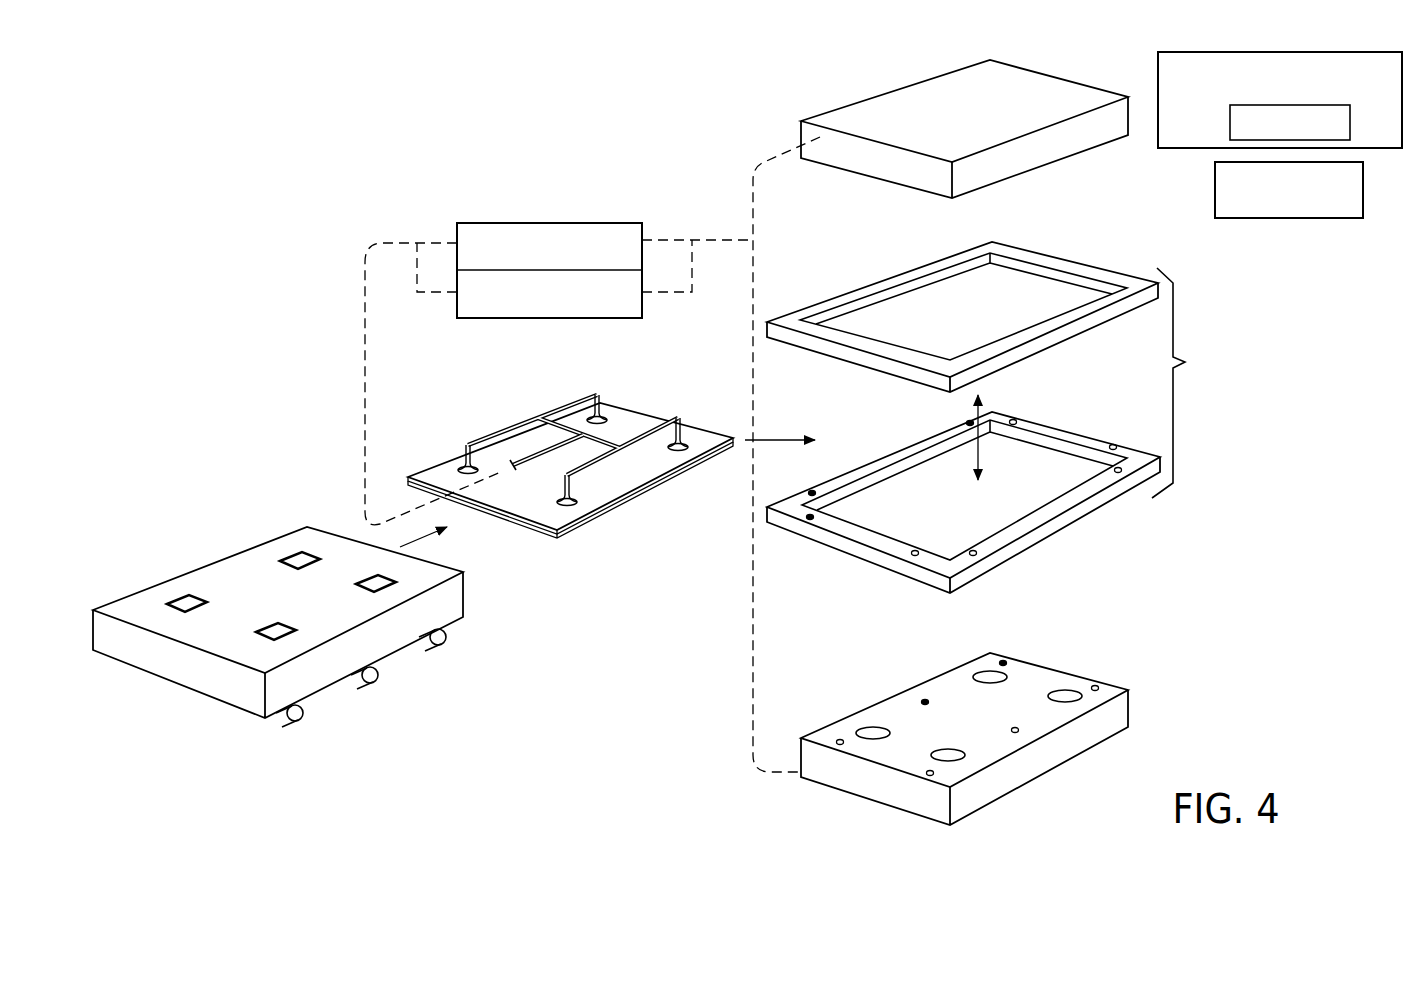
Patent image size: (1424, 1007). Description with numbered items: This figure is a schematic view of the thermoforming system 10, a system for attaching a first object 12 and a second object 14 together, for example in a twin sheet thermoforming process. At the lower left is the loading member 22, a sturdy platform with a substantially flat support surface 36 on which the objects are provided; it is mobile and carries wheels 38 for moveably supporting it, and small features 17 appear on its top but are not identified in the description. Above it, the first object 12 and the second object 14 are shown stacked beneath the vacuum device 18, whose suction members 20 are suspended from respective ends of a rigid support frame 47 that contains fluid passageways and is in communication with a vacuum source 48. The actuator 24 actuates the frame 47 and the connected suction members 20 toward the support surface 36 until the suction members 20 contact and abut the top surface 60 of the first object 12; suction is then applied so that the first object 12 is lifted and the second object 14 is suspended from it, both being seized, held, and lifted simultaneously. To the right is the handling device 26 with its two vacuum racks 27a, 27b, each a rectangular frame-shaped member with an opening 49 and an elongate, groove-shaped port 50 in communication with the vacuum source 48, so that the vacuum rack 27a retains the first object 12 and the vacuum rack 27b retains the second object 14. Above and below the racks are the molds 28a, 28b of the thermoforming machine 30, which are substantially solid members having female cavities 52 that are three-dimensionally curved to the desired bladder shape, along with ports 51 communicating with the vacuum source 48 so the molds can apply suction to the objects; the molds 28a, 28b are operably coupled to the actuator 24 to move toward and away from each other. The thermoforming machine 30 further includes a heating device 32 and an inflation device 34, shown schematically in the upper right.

The thermoforming system 10 is at (300, 252).
The first object 12 is at (710, 440).
The second object 14 is at (710, 460).
The locating pads 17 is at (300, 557).
The vacuum device 18 is at (497, 315).
The suction members 20 is at (602, 420).
The loading member 22 is at (200, 675).
The actuator 24 is at (467, 232).
The handling device 26 is at (1186, 383).
The vacuum rack 27a is at (1078, 263).
The vacuum rack 27b is at (1087, 515).
The mold 28a is at (1062, 143).
The mold 28b is at (1048, 752).
The thermoforming machine 30 is at (1383, 118).
The heating device 32 is at (1230, 125).
The inflation device 34 is at (1217, 190).
The support surface 36 is at (292, 608).
The wheels 38 is at (377, 675).
The support frame 47 is at (617, 438).
The vacuum source 48 is at (467, 300).
The opening 49 is at (1052, 270).
The ports 50 is at (977, 553).
The ports 51 is at (925, 700).
The female cavities 52 is at (868, 730).
The top surface 60 is at (517, 502).